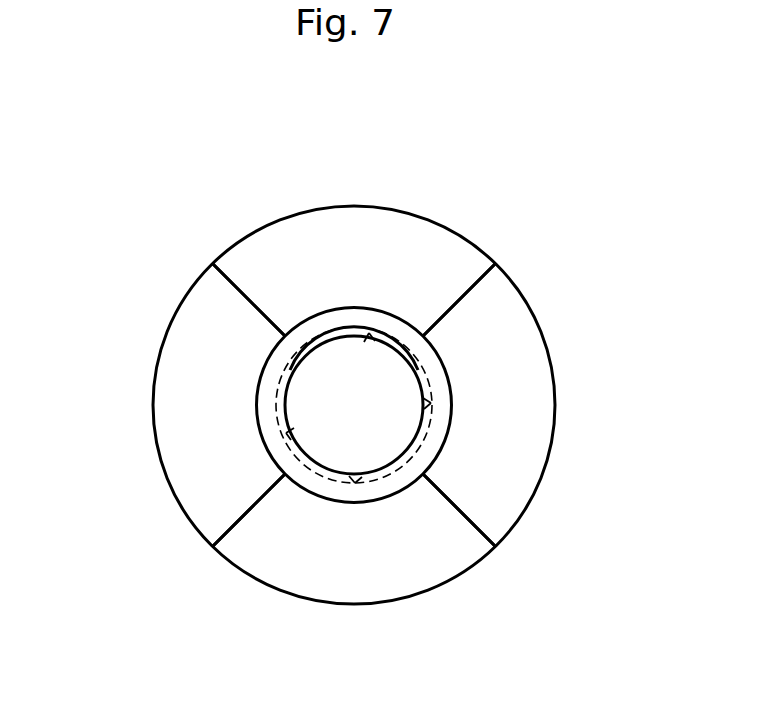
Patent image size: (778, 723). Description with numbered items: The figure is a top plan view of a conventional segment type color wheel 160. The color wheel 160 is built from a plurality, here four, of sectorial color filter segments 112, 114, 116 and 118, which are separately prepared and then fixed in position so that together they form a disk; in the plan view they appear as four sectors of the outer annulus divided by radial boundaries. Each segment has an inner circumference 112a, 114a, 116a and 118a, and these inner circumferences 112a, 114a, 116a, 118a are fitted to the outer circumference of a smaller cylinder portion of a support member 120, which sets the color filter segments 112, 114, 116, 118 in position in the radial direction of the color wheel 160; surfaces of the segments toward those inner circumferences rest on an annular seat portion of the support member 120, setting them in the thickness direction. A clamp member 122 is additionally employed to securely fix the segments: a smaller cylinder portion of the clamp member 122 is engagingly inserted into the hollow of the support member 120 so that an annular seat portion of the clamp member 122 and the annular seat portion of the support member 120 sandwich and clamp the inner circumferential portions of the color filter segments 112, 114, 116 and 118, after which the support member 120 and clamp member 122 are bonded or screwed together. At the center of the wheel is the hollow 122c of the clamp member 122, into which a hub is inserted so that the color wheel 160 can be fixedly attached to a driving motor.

The segment type color wheel 160 is at (505, 227).
The color filter segment 112 is at (153, 374).
The color filter segment 114 is at (333, 206).
The color filter segment 116 is at (551, 455).
The color filter segment 118 is at (325, 602).
The inner circumference 112a is at (286, 433).
The inner circumference 114a is at (369, 333).
The inner circumference 116a is at (431, 403).
The inner circumference 118a is at (355, 483).
The support member 120 is at (303, 318).
The clamp member 122 is at (354, 405).
The hollow 122c is at (318, 348).